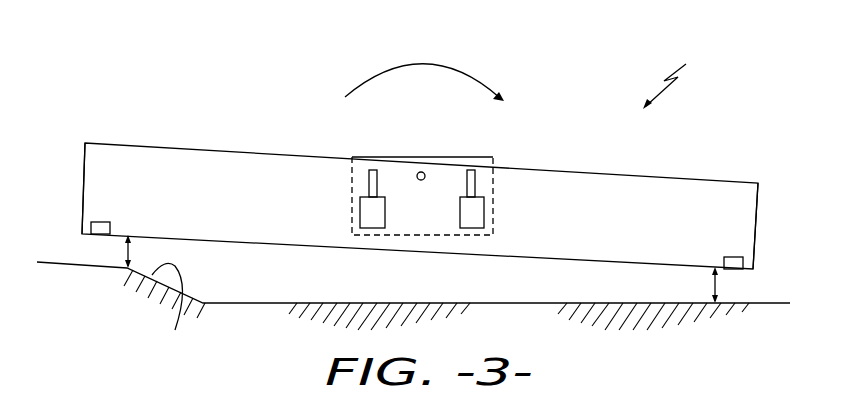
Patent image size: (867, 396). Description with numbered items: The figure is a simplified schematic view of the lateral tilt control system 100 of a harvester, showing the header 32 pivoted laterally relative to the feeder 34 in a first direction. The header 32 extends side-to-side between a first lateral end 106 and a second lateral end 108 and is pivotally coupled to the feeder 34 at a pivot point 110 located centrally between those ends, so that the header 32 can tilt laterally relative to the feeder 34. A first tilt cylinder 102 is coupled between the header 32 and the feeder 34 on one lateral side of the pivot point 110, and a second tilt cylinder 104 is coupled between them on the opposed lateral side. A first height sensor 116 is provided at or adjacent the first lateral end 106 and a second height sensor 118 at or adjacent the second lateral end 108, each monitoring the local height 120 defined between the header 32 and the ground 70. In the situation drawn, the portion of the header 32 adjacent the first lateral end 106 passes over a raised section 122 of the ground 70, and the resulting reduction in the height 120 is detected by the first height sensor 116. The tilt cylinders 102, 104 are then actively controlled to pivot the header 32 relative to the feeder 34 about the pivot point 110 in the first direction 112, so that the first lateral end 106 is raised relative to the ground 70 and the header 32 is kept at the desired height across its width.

The lateral tilt control system 100 is at (686, 74).
The header 32 is at (213, 146).
The feeder 34 is at (465, 157).
The ground 70 is at (63, 262).
The first tilt cylinder 102 is at (368, 212).
The second tilt cylinder 104 is at (476, 210).
The first lateral end 106 is at (84, 172).
The second lateral end 108 is at (758, 207).
The pivot point 110 is at (417, 173).
The first direction 112 is at (420, 62).
The first height sensor 116 is at (100, 222).
The second height sensor 118 is at (735, 256).
The height 120 is at (122, 251).
The raised section 122 is at (160, 312).